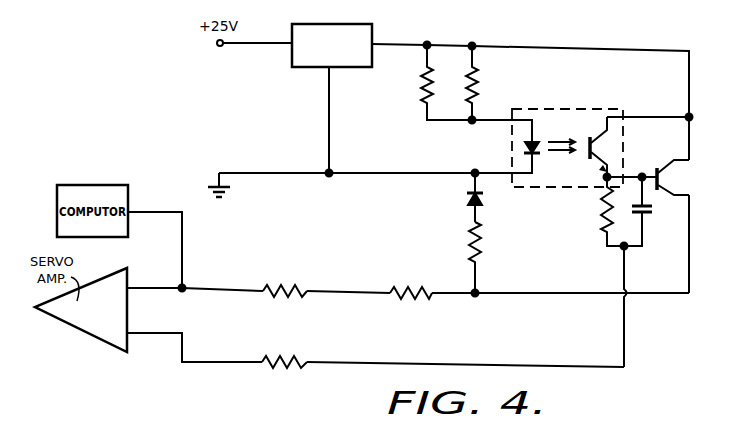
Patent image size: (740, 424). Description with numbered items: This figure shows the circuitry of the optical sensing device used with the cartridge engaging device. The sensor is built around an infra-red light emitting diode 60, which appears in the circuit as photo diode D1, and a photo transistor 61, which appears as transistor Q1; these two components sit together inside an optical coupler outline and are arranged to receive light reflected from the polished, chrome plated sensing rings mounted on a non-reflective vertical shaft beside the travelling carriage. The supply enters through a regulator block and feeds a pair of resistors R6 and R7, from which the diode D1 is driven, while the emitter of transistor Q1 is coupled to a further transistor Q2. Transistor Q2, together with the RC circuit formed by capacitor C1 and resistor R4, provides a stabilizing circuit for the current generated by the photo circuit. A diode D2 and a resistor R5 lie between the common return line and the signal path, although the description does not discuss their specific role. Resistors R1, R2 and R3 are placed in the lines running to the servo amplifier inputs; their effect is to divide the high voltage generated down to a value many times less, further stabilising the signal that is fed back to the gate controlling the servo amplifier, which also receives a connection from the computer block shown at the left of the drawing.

The light emitting diode 60 is at (523, 125).
The photo transistor 61 is at (600, 127).
The resistor R1 is at (285, 281).
The resistor R2 is at (284, 352).
The resistor R3 is at (411, 282).
The resistor R4 is at (600, 211).
The resistor R5 is at (487, 257).
The resistor R6 is at (435, 81).
The resistor R7 is at (483, 83).
The photo diode D1 is at (513, 146).
The diode D2 is at (486, 197).
The transistor Q1 is at (604, 147).
The transistor Q2 is at (675, 177).
The capacitor C1 is at (643, 211).